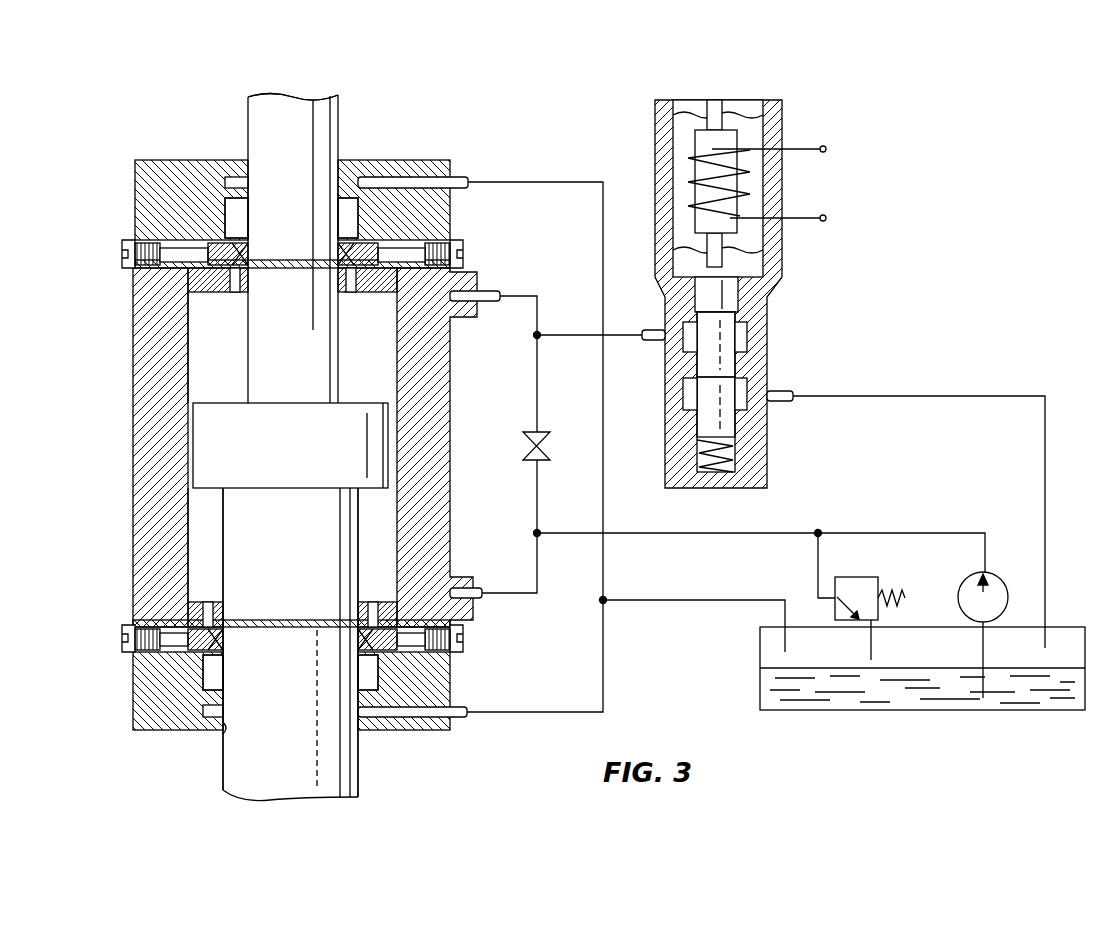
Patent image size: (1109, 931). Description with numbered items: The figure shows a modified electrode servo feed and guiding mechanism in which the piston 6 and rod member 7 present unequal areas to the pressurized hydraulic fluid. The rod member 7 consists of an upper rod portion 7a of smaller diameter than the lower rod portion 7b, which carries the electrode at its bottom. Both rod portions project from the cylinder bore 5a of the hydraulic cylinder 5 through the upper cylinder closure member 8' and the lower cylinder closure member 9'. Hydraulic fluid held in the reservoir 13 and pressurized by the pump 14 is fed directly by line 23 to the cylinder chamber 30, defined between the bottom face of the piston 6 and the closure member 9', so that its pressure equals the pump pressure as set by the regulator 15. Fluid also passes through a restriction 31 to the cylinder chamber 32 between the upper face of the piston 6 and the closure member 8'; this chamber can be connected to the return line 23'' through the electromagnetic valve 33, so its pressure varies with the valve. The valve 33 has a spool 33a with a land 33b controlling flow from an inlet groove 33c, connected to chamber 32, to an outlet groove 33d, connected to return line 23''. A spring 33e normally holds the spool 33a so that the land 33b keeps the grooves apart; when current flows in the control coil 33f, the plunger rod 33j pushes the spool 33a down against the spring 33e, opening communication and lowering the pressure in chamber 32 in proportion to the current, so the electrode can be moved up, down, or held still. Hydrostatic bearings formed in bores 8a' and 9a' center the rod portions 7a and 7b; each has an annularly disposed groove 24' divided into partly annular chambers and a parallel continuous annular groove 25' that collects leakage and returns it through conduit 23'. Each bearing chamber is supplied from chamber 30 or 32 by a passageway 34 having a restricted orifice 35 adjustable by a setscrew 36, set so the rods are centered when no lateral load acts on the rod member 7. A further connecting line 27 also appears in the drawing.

The hydraulic cylinder 5 is at (133, 457).
The cylinder bore 5a is at (185, 533).
The piston 6 is at (345, 476).
The piston rod member 7 is at (360, 775).
The upper rod portion 7a is at (285, 363).
The lower rod portion 7b is at (275, 537).
The upper cylinder closure member 8' is at (277, 200).
The bore 8a' is at (224, 158).
The cylinder closure member 9' is at (275, 691).
The bore 9a' is at (202, 740).
The reservoir 13 is at (760, 692).
The pump 14 is at (975, 573).
The regulator 15 is at (862, 577).
The line 23 is at (761, 536).
The conduit 23' is at (693, 613).
The return line 23'' is at (919, 506).
The annularly disposed groove 24' is at (290, 442).
The continuous annular groove 25' is at (345, 439).
The connecting line 27 is at (603, 500).
The cylinder chamber 30 is at (188, 500).
The restriction 31 is at (523, 448).
The cylinder chamber 32 is at (188, 370).
The electromagnetic valve 33 is at (767, 362).
The spool 33a is at (722, 332).
The land 33b is at (705, 422).
The inlet groove 33c is at (690, 341).
The outlet groove 33d is at (745, 392).
The spring 33e is at (735, 456).
The valve control coil 33f is at (718, 148).
The plunger rod 33j is at (722, 108).
The passageway 34 is at (228, 292).
The restricted orifice 35 is at (338, 256).
The setscrew 36 is at (463, 242).